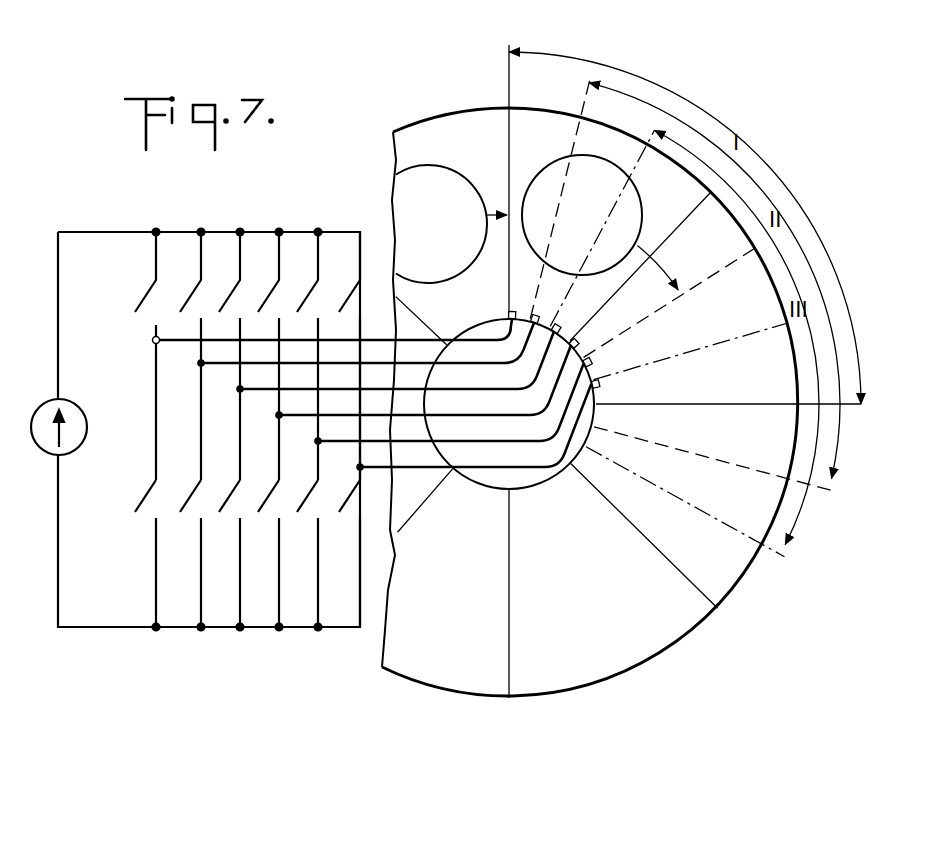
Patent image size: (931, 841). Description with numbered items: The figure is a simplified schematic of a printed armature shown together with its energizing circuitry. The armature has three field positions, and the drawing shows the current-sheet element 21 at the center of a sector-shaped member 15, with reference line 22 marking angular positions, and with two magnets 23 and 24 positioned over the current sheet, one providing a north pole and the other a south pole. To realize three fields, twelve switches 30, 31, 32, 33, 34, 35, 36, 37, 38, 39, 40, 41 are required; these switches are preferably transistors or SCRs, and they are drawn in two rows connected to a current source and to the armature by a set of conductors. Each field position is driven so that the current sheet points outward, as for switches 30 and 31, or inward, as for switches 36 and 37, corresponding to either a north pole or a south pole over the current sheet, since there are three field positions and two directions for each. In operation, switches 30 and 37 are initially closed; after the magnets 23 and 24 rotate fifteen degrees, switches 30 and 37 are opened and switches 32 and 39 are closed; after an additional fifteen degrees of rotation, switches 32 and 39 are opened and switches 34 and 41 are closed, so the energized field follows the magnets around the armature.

The stator disk 15 is at (676, 645).
The rotor with contacts 21 is at (507, 313).
The reference position line 22 is at (594, 343).
The magnet 23 is at (598, 208).
The magnet 24 is at (441, 208).
The switch 30 is at (146, 300).
The switch 31 is at (146, 496).
The switch 32 is at (192, 300).
The switch 33 is at (190, 500).
The switch 34 is at (232, 300).
The switch 35 is at (230, 500).
The switch 36 is at (271, 300).
The switch 37 is at (270, 500).
The switch 38 is at (310, 300).
The switch 39 is at (309, 500).
The switch 40 is at (352, 298).
The switch 41 is at (352, 496).